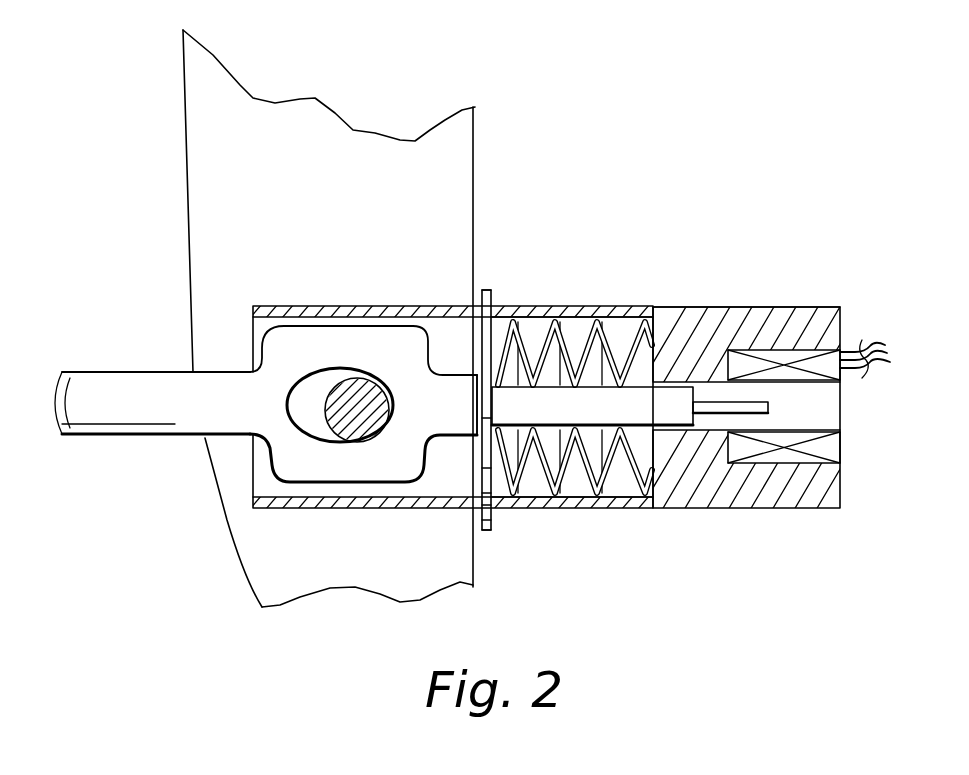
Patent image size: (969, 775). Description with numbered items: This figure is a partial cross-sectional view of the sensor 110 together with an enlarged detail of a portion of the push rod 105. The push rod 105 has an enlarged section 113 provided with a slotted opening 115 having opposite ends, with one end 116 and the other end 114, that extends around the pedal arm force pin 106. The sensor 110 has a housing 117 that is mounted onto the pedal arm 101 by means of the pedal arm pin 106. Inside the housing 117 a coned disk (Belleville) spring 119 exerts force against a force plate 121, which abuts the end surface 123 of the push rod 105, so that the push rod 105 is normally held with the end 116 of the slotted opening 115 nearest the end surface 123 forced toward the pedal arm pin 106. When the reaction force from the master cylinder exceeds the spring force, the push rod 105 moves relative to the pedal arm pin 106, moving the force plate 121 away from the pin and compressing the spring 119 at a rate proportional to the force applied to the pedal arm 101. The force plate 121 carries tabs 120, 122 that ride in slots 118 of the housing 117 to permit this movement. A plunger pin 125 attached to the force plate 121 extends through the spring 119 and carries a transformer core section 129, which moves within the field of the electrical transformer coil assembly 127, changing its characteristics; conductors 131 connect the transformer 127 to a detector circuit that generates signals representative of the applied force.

The pedal arm 101 is at (455, 195).
The push rod 105 is at (173, 440).
The pedal arm force pin 106 is at (330, 445).
The sensor 110 is at (744, 304).
The enlarged section 113 is at (270, 312).
The first slot end 114 is at (302, 421).
The slotted opening 115 is at (307, 390).
The end of the slotted opening 116 is at (382, 414).
The housing 117 is at (698, 509).
The slots 118 is at (515, 308).
The spring 119 is at (605, 340).
The tab 120 is at (492, 290).
The force plate 121 is at (468, 305).
The tab 122 is at (486, 531).
The end surface 123 is at (478, 374).
The plunger pin 125 is at (678, 325).
The electrical transformer coil assembly 127 is at (840, 431).
The transformer core section 129 is at (769, 409).
The conductors 131 is at (862, 345).